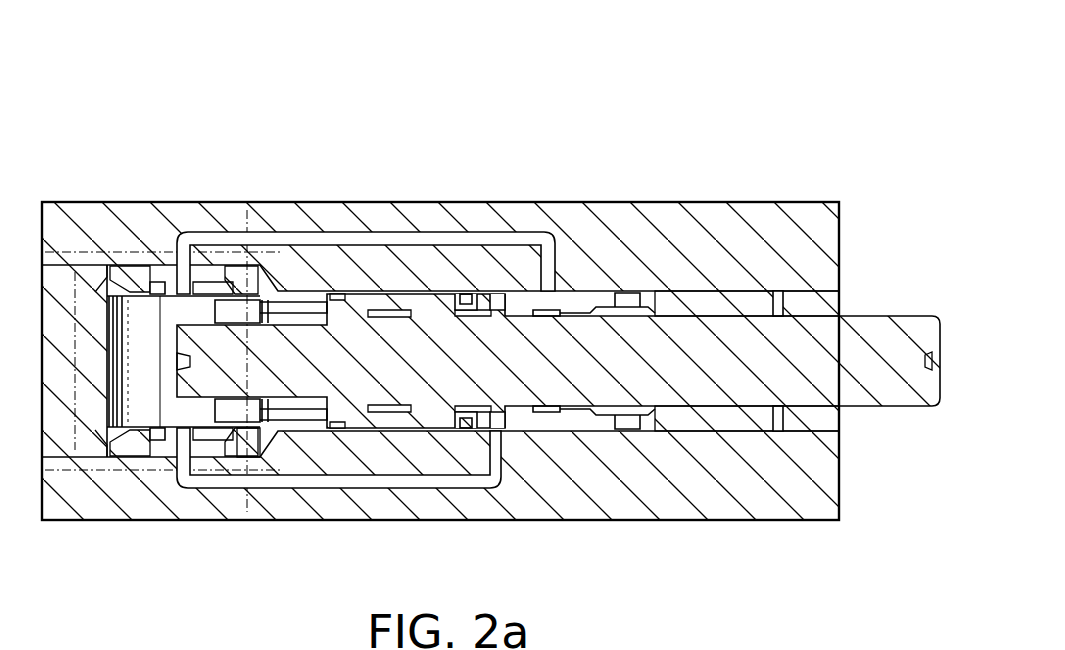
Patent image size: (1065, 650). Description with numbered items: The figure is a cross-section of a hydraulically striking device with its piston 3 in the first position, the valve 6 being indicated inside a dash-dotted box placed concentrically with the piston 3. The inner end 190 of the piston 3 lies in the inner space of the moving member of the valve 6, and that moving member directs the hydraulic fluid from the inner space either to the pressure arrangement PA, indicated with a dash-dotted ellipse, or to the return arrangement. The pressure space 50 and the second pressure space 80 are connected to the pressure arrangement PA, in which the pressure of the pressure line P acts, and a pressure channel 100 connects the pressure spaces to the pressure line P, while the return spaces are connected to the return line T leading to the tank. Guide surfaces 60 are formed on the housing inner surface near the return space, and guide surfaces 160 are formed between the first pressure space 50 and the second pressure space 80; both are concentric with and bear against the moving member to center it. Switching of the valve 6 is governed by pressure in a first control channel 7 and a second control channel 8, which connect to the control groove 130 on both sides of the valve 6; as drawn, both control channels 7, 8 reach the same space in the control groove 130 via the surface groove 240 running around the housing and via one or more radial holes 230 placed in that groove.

The piston 3 is at (883, 317).
The valve 6 is at (75, 240).
The first control channel 7 is at (376, 236).
The second control channel 8 is at (398, 488).
The pressure space 50 is at (85, 275).
The guide surfaces 60 is at (265, 262).
The second pressure space 80 is at (108, 400).
The pressure channel 100 is at (90, 262).
The control groove 130 is at (215, 275).
The guide surfaces 160 is at (112, 370).
The inner end 190 is at (160, 440).
The radial holes 230 is at (188, 268).
The surface groove 240 is at (183, 250).
The return line T is at (467, 300).
The pressure line P is at (614, 300).
The pressure arrangement PA is at (107, 365).